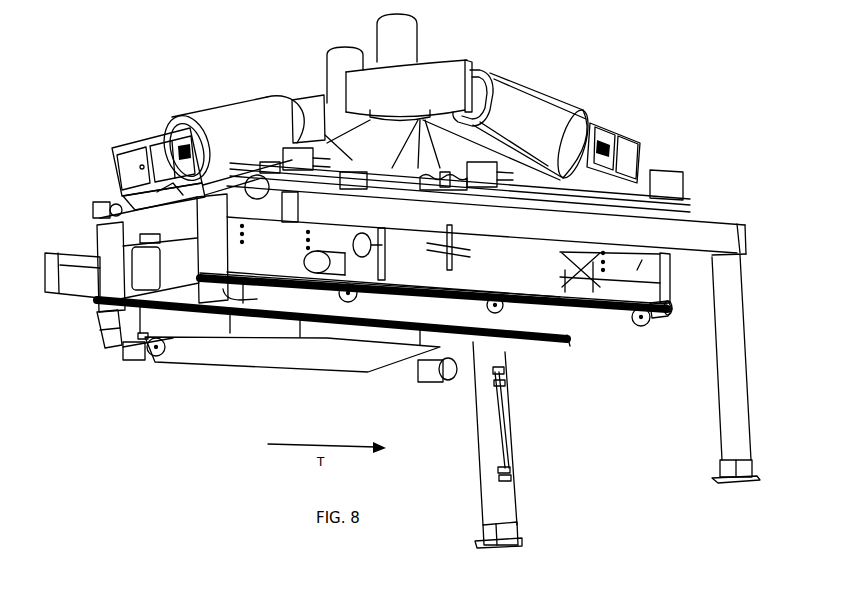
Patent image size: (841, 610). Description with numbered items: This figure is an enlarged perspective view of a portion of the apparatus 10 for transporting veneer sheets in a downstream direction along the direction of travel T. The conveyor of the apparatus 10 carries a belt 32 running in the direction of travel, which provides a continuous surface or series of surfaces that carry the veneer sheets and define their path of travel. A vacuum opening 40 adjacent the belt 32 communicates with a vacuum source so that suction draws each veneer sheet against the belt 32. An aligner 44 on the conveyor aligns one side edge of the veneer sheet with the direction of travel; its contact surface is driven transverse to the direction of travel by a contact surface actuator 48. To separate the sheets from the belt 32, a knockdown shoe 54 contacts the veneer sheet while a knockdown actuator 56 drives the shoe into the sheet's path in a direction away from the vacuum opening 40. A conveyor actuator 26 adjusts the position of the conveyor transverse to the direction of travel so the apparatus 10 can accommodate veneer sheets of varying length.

The apparatus 10 is at (661, 64).
The conveyor actuator 26 is at (312, 268).
The belt 32 is at (560, 338).
The vacuum opening 40 is at (483, 337).
The aligner 44 is at (643, 287).
The contact surface actuator 48 is at (670, 307).
The knockdown shoe 54 is at (187, 337).
The knockdown actuator 56 is at (130, 322).